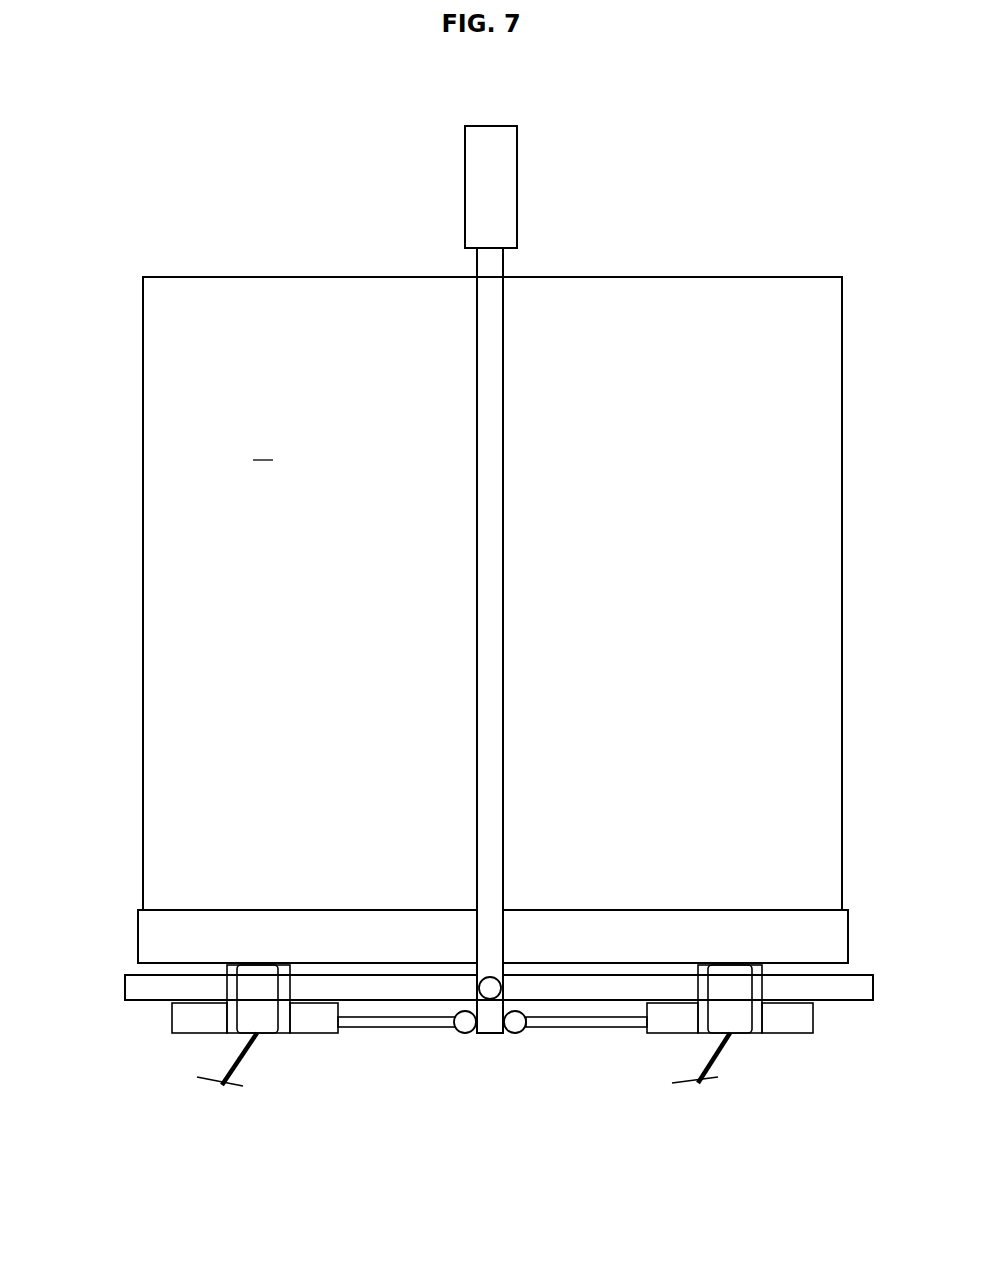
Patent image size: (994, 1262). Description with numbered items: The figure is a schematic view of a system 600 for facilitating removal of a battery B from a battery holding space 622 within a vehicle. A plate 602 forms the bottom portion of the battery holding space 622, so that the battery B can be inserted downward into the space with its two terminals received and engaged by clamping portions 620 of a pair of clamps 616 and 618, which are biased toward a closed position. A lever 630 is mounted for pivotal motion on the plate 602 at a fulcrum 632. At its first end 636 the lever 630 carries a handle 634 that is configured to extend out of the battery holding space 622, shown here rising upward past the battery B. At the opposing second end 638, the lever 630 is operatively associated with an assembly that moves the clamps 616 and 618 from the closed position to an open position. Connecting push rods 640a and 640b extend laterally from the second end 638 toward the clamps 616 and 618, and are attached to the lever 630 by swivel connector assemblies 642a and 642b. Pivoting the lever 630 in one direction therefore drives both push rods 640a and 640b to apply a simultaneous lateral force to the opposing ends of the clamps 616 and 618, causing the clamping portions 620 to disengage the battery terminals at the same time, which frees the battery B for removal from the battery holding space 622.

The system 600 is at (786, 89).
The plate 602 is at (128, 985).
The clamp 616 is at (797, 1033).
The clamp 618 is at (310, 1023).
The clamping portions 620 is at (227, 1020).
The battery holding space 622 is at (853, 261).
The lever 630 is at (490, 603).
The fulcrum 632 is at (491, 999).
The handle 634 is at (477, 232).
The first end 636 is at (495, 265).
The second end 638 is at (487, 1034).
The push rod 640a is at (638, 1028).
The push rod 640b is at (400, 1026).
The swivel connector assembly 642a is at (518, 1033).
The swivel connector assembly 642b is at (462, 1033).